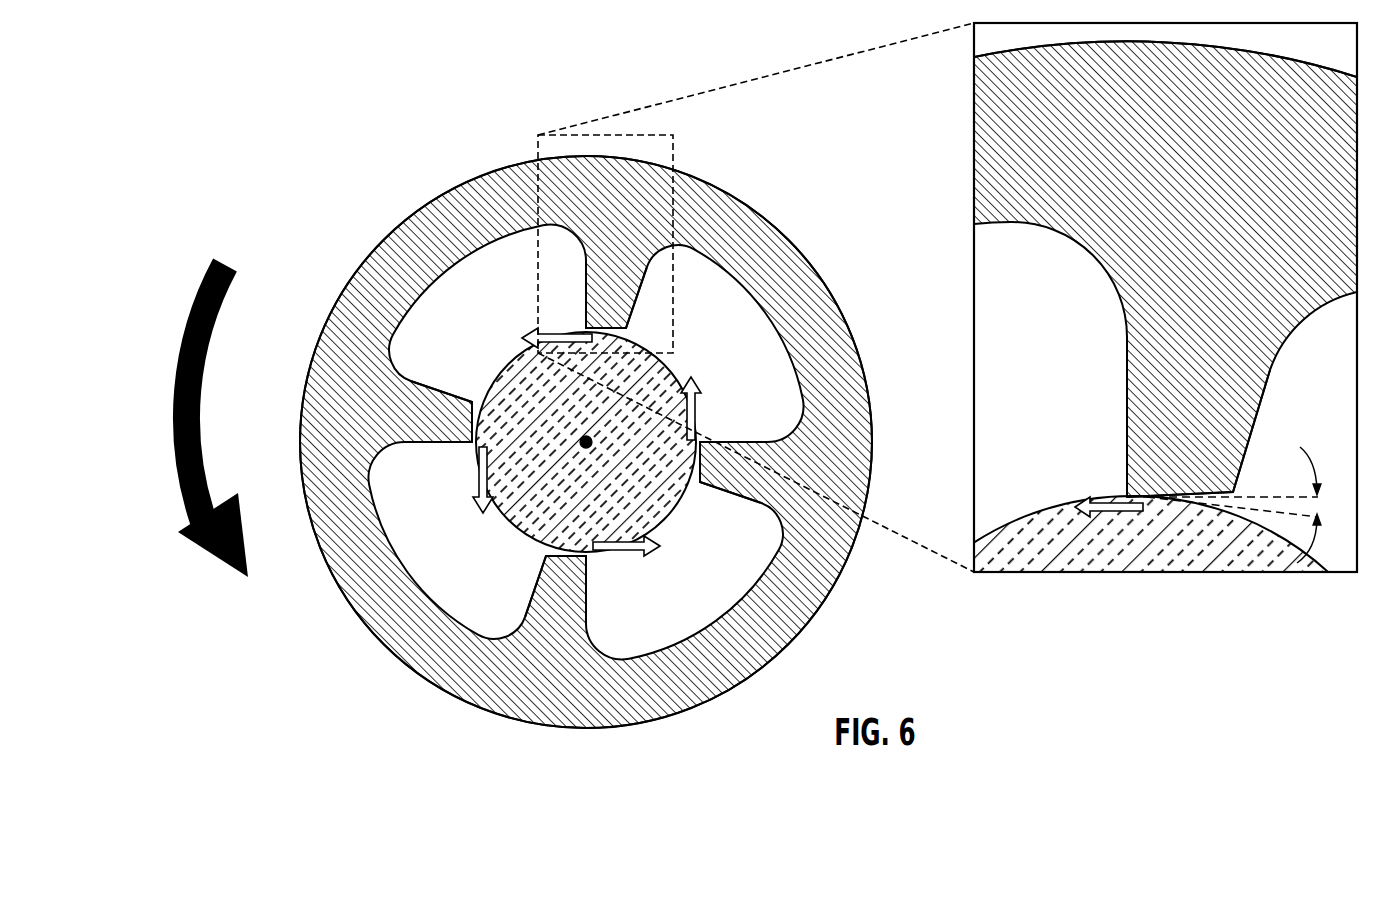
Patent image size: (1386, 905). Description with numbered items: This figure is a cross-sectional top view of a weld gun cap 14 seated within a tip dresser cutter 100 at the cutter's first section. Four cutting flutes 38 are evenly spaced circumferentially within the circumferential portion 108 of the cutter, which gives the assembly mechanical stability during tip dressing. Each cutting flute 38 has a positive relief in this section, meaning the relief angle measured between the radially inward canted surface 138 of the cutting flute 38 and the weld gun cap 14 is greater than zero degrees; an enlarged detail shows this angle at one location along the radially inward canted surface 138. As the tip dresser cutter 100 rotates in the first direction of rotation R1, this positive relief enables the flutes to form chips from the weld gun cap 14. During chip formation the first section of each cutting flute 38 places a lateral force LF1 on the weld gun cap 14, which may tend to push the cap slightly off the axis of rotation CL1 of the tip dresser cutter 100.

The weld gun cap 14 is at (502, 391).
The cutting flute 38 is at (537, 615).
The tip dresser cutter 100 is at (402, 242).
The circumferential portion 108 is at (468, 190).
The radially inward canted surface 138 is at (1205, 497).
The first direction of rotation R1 is at (212, 265).
The axis of rotation CL1 is at (581, 443).
The lateral force LF1 is at (1077, 502).